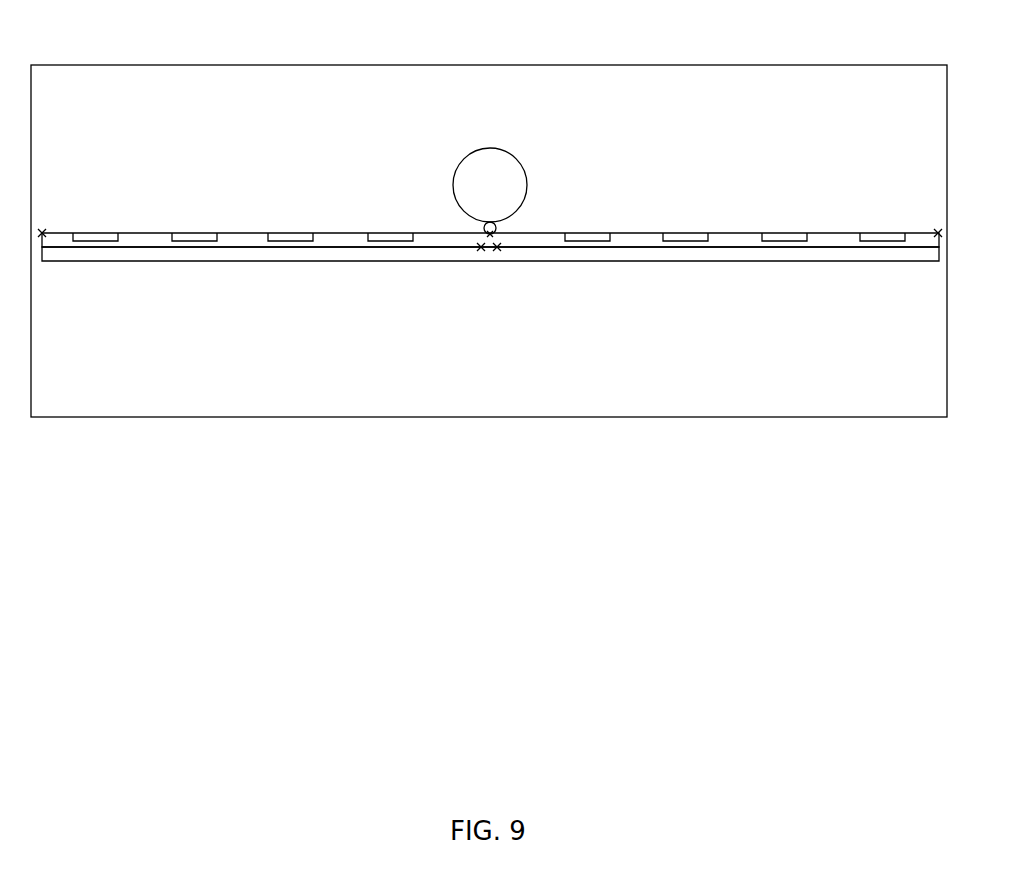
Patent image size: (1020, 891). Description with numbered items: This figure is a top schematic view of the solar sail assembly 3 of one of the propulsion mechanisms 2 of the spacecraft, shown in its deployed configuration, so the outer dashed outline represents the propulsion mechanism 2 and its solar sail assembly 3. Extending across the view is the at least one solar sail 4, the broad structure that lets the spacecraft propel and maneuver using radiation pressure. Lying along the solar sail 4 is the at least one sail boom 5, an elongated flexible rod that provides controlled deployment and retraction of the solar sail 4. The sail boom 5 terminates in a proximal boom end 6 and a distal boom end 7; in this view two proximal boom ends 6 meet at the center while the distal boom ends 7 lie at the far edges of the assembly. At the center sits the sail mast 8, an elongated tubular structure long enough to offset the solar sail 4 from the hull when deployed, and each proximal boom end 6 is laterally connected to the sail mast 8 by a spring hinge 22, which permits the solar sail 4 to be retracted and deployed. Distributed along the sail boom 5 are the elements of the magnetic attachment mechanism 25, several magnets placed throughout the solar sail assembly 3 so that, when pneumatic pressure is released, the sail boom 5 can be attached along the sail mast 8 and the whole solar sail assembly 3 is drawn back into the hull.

The propulsion mechanism 2 is at (492, 92).
The solar sail assembly 3 is at (489, 218).
The solar sail 4 is at (773, 263).
The sail boom 5 is at (247, 240).
The proximal boom end 6 is at (481, 252).
The distal boom end 7 is at (42, 231).
The sail mast 8 is at (463, 160).
The spring hinge 22 is at (491, 221).
The magnetic attachment mechanism 25 is at (188, 233).